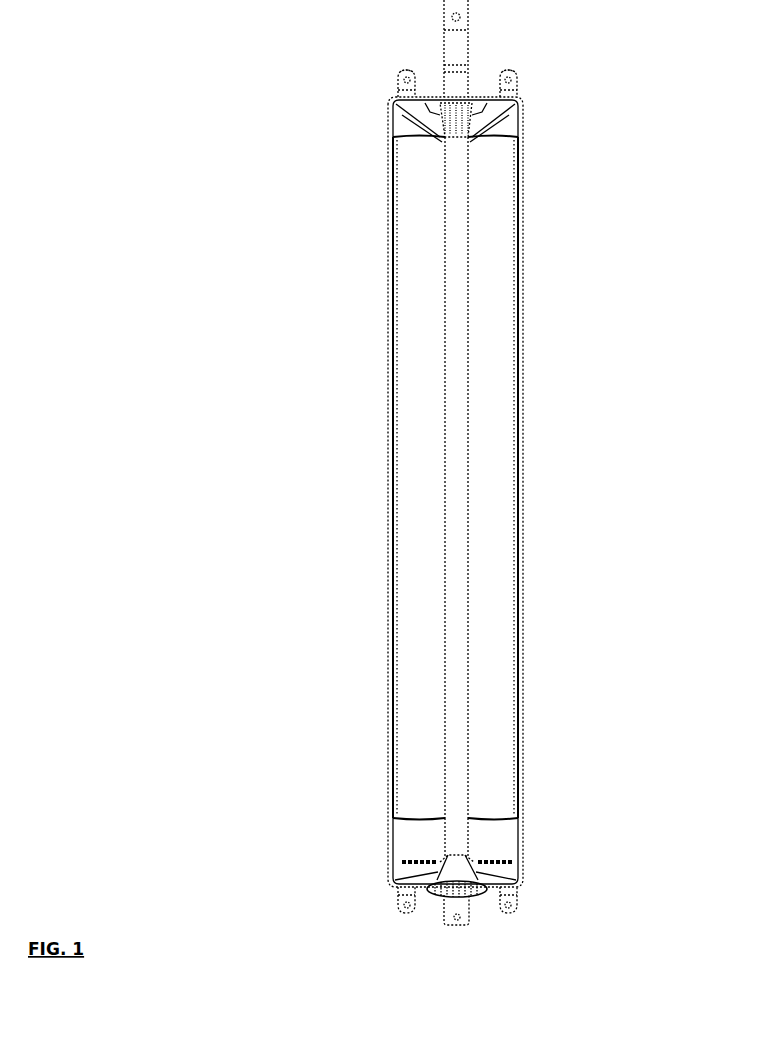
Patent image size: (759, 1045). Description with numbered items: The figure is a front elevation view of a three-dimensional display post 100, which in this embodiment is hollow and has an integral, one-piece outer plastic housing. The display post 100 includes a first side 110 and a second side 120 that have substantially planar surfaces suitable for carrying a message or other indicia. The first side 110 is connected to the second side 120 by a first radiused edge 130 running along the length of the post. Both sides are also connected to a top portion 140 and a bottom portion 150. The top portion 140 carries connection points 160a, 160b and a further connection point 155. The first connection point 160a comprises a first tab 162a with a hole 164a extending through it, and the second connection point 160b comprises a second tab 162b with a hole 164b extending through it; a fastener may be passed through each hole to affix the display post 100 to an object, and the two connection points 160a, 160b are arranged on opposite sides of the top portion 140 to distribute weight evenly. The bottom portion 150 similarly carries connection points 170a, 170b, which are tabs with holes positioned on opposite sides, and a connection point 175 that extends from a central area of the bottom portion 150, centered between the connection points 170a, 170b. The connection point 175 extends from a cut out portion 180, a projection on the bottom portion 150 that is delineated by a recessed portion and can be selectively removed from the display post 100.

The display post 100 is at (238, 109).
The first side 110 is at (400, 362).
The second side 120 is at (495, 362).
The first radiused edge 130 is at (459, 420).
The top portion 140 is at (480, 107).
The bottom portion 150 is at (495, 882).
The connection point 155 is at (470, 20).
The first connection point 160a is at (400, 87).
The second connection point 160b is at (518, 87).
The first tab 162a is at (402, 70).
The second tab 162b is at (513, 69).
The hole 164a is at (400, 79).
The hole 164b is at (516, 79).
The connection point 170a is at (397, 905).
The connection point 170b is at (518, 900).
The connection point 175 is at (470, 913).
The cut out portion 180 is at (436, 890).